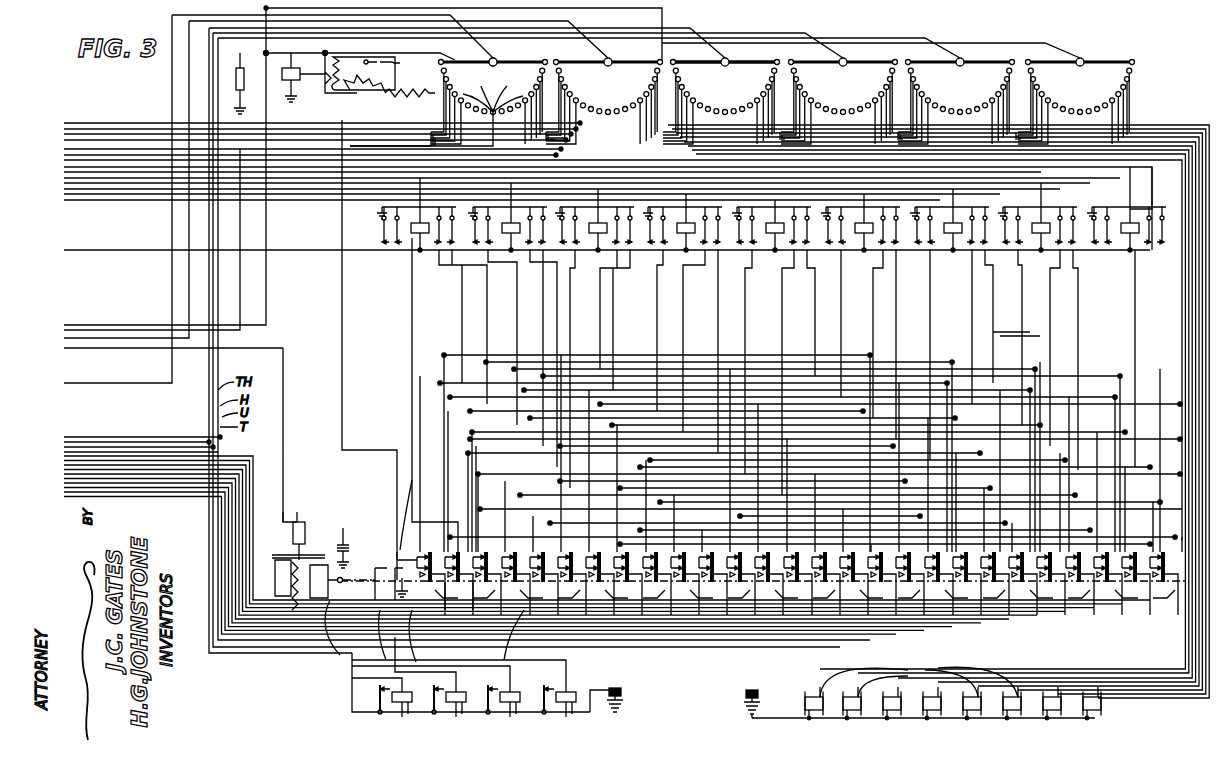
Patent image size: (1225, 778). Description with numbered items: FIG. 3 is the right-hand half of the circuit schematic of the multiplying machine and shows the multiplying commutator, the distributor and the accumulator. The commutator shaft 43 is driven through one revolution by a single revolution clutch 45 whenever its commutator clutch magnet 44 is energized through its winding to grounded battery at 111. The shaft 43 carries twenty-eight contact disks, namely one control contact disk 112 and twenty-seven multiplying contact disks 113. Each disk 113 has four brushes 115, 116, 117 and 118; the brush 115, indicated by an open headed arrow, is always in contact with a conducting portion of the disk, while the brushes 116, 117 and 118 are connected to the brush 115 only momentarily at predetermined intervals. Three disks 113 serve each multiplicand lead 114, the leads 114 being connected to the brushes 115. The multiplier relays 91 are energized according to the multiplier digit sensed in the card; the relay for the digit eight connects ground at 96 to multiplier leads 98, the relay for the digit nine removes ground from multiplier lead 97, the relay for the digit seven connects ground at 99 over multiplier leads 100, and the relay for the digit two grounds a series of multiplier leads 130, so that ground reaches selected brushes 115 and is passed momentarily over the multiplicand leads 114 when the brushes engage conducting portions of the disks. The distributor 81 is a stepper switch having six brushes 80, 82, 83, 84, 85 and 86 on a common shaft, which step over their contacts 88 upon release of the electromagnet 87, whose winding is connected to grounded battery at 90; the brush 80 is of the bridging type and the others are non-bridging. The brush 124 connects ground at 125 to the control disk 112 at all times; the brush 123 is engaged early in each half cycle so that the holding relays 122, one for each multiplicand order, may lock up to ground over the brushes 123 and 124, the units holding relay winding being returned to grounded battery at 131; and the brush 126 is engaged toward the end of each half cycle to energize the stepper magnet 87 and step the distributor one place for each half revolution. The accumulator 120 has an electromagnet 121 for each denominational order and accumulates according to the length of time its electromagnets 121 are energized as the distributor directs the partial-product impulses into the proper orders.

The commutator shaft 43 is at (336, 575).
The commutator clutch magnet 44 is at (297, 514).
The single revolution clutch 45 is at (265, 565).
The brush 80 is at (606, 58).
The distributor 81 is at (746, 19).
The brush 82 is at (496, 62).
The brush 83 is at (701, 60).
The brush 84 is at (834, 60).
The brush 85 is at (978, 63).
The brush 86 is at (1096, 62).
The electromagnet 87 is at (320, 94).
The contacts 88 is at (449, 102).
The grounded battery 90 is at (285, 100).
The multiplier relays 91 is at (440, 206).
The ground 96 is at (1059, 337).
The multiplier lead 97 is at (1168, 302).
The multiplier leads 98 is at (1134, 296).
The ground 99 is at (992, 327).
The multiplier leads 100 is at (968, 336).
The grounded battery 111 is at (343, 527).
The control contact disk 112 is at (375, 568).
The multiplying contact disks 113 is at (430, 552).
The multiplicand leads 114 is at (178, 498).
The brush 115 is at (428, 562).
The brush 116 is at (428, 560).
The brush 117 is at (436, 552).
The brush 118 is at (457, 610).
The accumulator 120 is at (1110, 714).
The electromagnets 121 is at (932, 674).
The holding relays 122 is at (525, 720).
The brush 123 is at (334, 616).
The brush 124 is at (384, 616).
The ground 125 is at (420, 616).
The brush 126 is at (402, 577).
The multiplier leads 130 is at (548, 302).
The grounded battery 131 is at (590, 712).